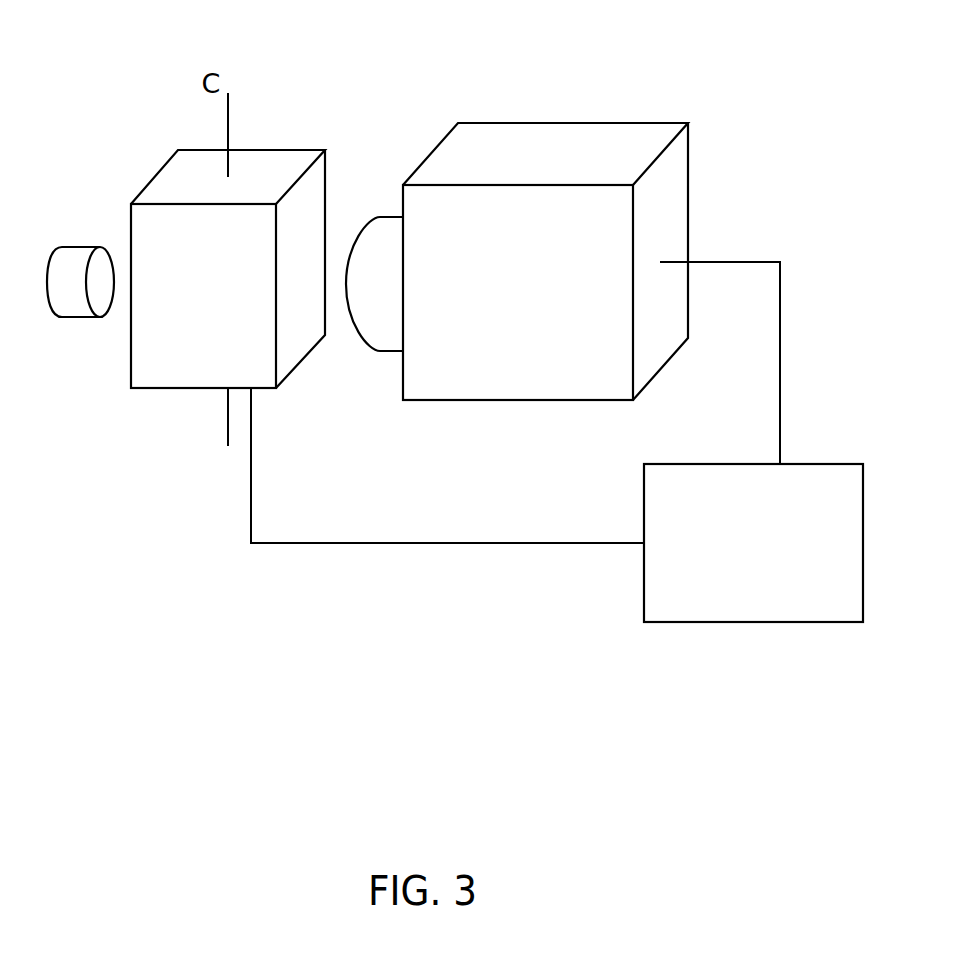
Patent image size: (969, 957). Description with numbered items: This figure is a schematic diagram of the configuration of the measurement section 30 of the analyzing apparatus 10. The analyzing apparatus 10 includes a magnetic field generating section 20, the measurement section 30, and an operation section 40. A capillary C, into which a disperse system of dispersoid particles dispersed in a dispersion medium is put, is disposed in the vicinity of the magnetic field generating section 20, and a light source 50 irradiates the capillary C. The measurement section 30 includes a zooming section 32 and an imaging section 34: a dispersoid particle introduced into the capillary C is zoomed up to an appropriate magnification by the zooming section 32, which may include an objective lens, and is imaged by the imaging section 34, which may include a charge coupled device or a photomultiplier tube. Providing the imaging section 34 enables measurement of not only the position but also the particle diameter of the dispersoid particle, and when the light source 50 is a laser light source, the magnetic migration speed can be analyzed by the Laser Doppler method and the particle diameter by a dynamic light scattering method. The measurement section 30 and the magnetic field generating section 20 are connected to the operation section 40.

The analyzing apparatus 10 is at (470, 790).
The magnetic field generating section 20 is at (129, 431).
The measurement section 30 is at (437, 55).
The zooming section 32 is at (389, 191).
The imaging section 34 is at (484, 141).
The operation section 40 is at (619, 597).
The light source 50 is at (65, 353).